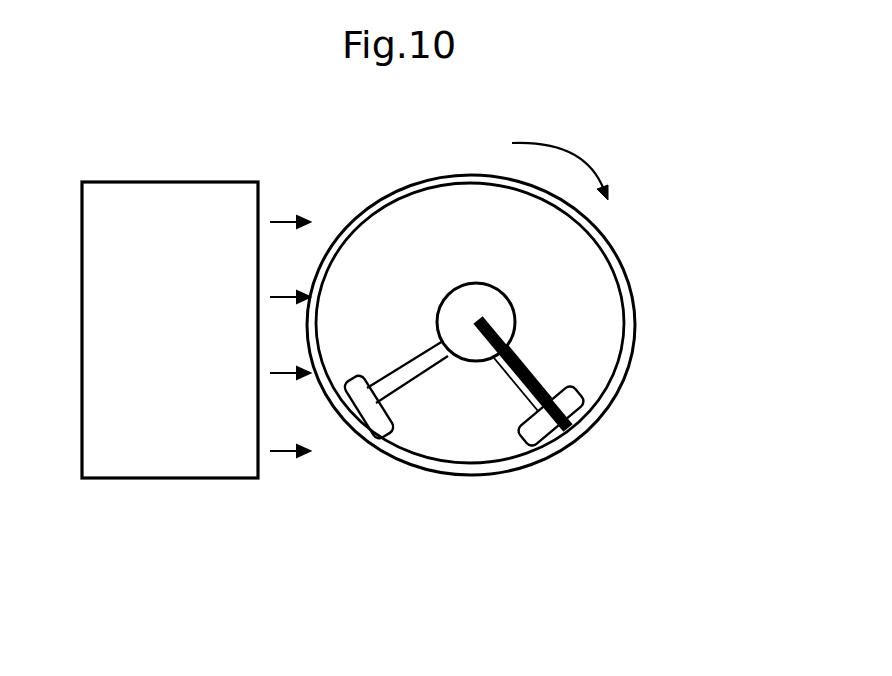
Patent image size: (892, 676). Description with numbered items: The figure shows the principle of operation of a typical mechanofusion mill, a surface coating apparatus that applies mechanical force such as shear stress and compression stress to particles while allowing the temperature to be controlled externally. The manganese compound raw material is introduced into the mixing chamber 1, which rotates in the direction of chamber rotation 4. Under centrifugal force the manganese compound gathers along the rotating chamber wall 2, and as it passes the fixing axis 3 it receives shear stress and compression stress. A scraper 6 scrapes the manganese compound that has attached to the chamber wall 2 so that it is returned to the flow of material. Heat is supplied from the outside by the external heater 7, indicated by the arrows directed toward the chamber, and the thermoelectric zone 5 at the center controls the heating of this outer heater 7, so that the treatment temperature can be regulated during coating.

The mixing chamber 1 is at (605, 352).
The chamber wall 2 is at (608, 395).
The fixing axis 3 is at (542, 440).
The direction of chamber rotation 4 is at (560, 155).
The thermoelectric zone 5 is at (493, 331).
The scraper 6 is at (372, 423).
The external heater 7 is at (196, 330).